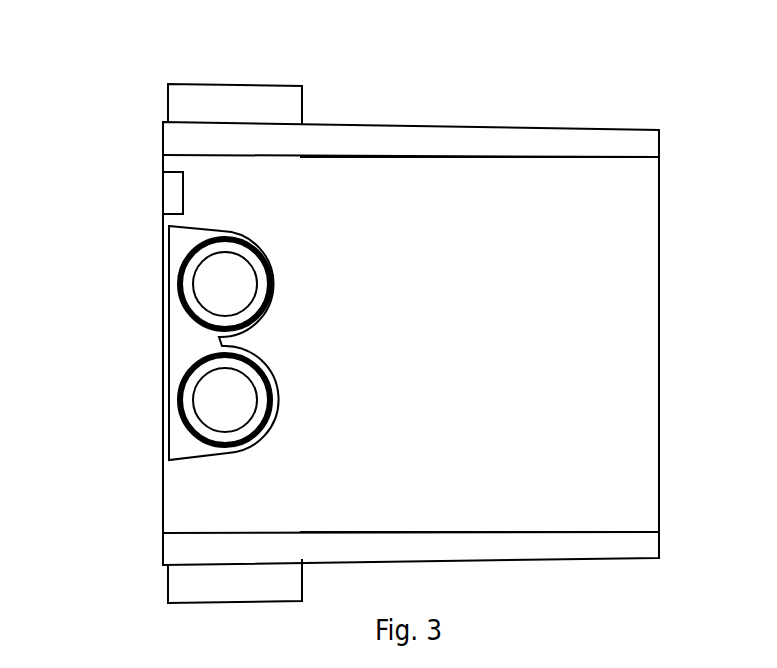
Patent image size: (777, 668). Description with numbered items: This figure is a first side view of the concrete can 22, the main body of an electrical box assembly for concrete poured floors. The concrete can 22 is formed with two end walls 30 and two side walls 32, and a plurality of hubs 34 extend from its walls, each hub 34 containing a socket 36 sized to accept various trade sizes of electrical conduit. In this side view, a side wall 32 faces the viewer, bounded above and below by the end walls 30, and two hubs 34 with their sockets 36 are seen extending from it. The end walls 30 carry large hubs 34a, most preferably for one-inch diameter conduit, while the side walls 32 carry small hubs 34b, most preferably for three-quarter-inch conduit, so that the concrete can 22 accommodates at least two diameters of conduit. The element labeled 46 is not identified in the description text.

The concrete can 22 is at (104, 105).
The end wall 30 is at (497, 125).
The side wall 32 is at (448, 335).
The hub 34 is at (306, 289).
The large hub 34a is at (302, 107).
The small hub 34b is at (280, 400).
The socket 36 is at (207, 284).
The end wall 46 is at (659, 320).